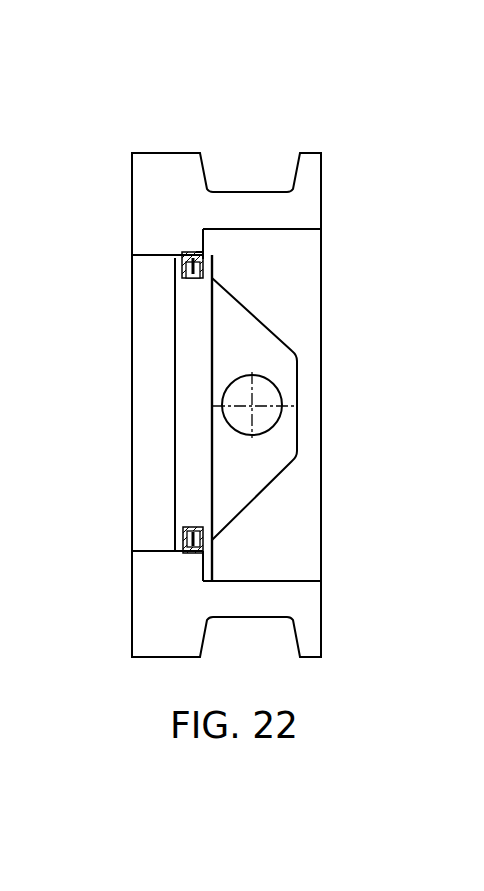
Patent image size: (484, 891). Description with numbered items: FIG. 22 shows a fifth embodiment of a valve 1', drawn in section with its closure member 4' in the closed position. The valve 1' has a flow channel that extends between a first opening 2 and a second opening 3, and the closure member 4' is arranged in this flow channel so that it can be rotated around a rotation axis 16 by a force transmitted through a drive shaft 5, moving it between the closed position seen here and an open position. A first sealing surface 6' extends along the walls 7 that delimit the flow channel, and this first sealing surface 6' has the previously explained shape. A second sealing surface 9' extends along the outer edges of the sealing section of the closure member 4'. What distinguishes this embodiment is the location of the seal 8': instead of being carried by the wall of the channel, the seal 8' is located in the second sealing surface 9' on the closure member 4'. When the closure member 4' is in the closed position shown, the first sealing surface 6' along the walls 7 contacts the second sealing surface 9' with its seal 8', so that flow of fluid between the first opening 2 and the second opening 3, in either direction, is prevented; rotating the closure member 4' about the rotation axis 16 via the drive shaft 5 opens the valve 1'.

The valve 1' is at (184, 374).
The first opening 2 is at (137, 337).
The second opening 3 is at (315, 312).
The closure member 4' is at (117, 404).
The drive shaft 5 is at (268, 417).
The first sealing surface 6' is at (236, 273).
The walls 7 is at (293, 230).
The seal 8' is at (140, 270).
The second sealing surface 9' is at (144, 530).
The rotation axis 16 is at (252, 405).